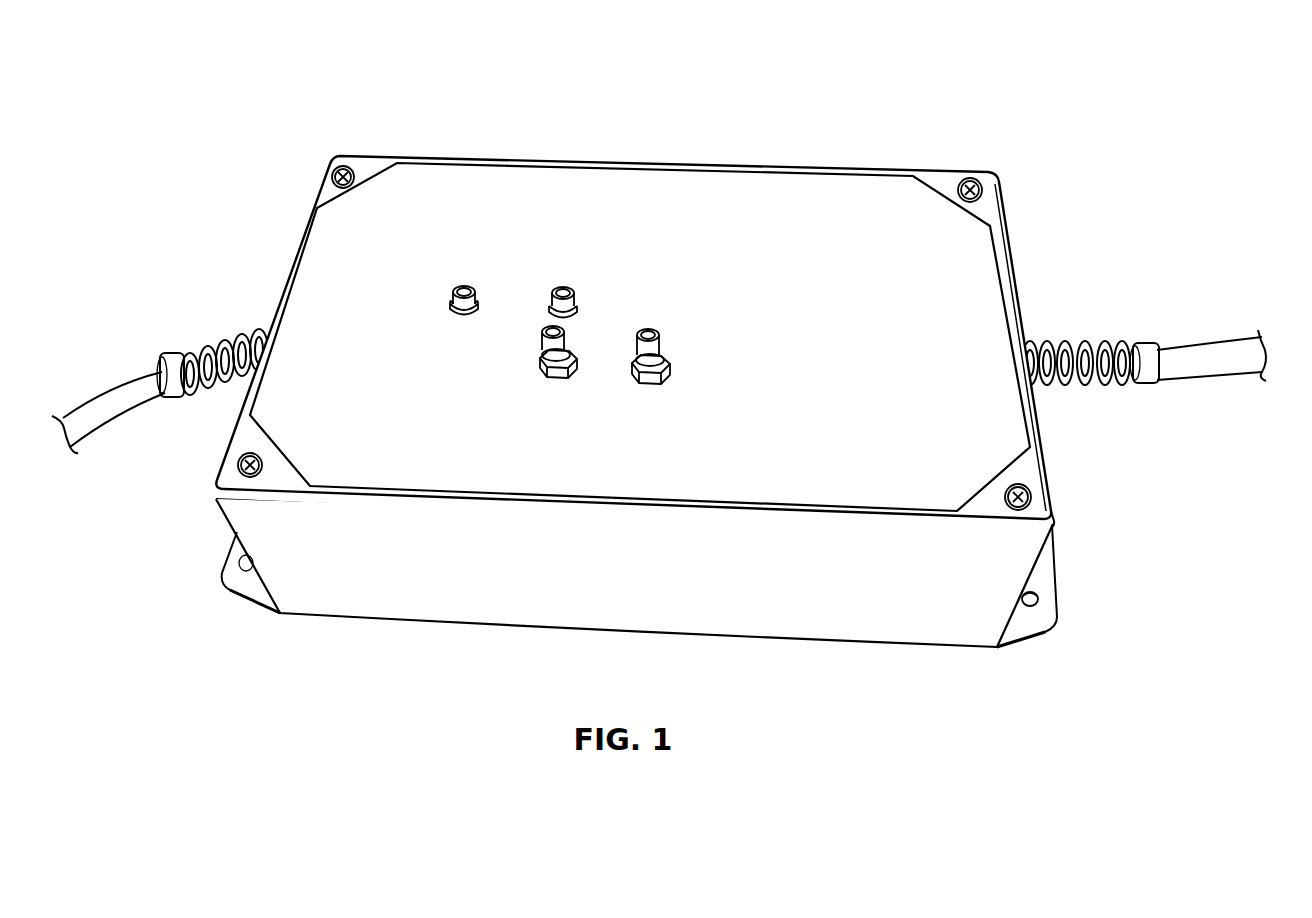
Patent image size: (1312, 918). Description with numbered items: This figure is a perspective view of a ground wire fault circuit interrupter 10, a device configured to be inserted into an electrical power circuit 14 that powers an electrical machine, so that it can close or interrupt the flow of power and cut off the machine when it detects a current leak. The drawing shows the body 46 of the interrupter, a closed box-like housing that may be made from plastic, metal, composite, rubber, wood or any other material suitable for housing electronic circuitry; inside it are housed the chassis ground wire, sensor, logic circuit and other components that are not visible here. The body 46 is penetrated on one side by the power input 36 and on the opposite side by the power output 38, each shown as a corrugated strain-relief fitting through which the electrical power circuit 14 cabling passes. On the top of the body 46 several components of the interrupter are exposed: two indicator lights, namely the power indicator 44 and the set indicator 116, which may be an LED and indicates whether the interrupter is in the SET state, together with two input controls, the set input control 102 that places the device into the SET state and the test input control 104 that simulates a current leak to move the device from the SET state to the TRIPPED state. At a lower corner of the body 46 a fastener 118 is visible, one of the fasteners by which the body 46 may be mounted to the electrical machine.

The ground wire fault circuit interrupter 10 is at (204, 80).
The electrical power circuit 14 is at (108, 397).
The power input 36 is at (220, 333).
The power output 38 is at (1067, 333).
The power indicator 44 is at (464, 290).
The body 46 is at (711, 637).
The set input control 102 is at (651, 335).
The test input control 104 is at (553, 332).
The set indicator 116 is at (567, 291).
The fastener 118 is at (1040, 605).